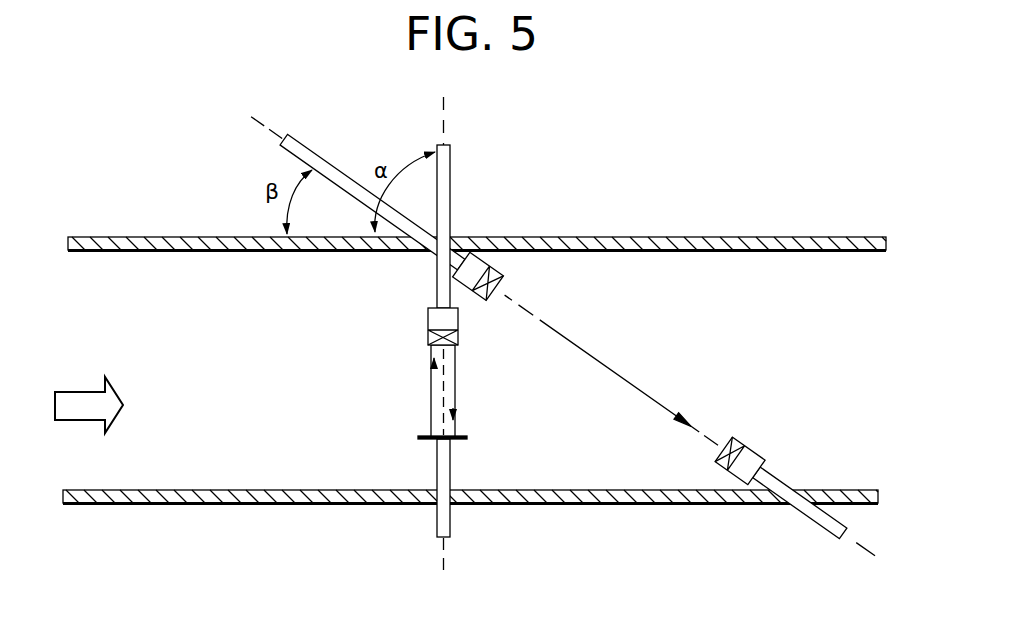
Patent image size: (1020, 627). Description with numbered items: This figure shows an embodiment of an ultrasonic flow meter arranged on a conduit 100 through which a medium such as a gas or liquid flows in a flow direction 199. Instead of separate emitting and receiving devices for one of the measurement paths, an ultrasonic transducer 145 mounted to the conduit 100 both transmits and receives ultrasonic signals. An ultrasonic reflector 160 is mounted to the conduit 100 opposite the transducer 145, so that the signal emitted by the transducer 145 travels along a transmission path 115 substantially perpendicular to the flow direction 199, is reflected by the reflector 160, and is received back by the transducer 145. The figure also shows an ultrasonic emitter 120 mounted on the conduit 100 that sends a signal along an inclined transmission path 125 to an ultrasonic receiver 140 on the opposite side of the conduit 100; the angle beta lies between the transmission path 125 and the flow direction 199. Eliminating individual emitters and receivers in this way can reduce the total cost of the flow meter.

The conduit 100 is at (788, 235).
The transmission path 115 is at (457, 375).
The ultrasonic emitter 120 is at (508, 270).
The transmission path 125 is at (638, 386).
The ultrasonic receiver 140 is at (756, 452).
The ultrasonic transducer 145 is at (434, 320).
The ultrasonic reflector 160 is at (425, 439).
The flow direction 199 is at (78, 391).